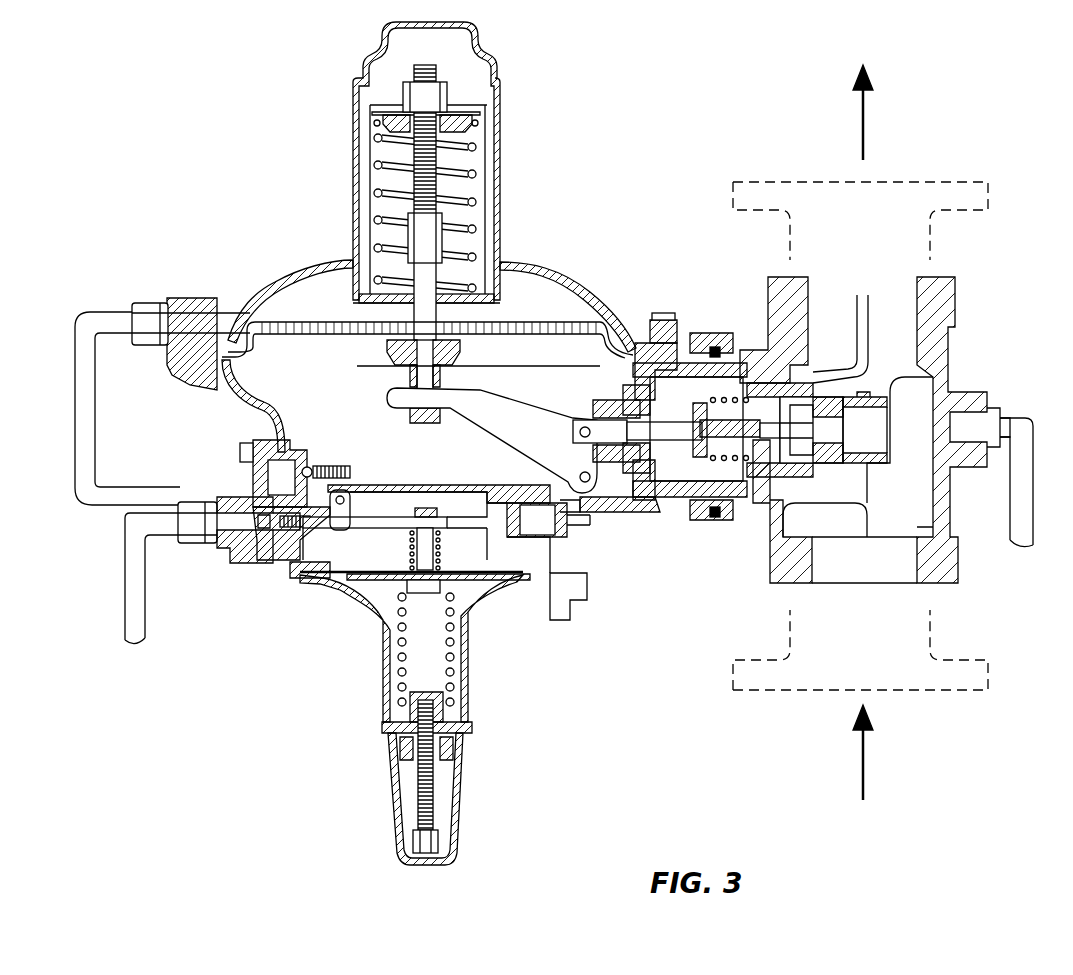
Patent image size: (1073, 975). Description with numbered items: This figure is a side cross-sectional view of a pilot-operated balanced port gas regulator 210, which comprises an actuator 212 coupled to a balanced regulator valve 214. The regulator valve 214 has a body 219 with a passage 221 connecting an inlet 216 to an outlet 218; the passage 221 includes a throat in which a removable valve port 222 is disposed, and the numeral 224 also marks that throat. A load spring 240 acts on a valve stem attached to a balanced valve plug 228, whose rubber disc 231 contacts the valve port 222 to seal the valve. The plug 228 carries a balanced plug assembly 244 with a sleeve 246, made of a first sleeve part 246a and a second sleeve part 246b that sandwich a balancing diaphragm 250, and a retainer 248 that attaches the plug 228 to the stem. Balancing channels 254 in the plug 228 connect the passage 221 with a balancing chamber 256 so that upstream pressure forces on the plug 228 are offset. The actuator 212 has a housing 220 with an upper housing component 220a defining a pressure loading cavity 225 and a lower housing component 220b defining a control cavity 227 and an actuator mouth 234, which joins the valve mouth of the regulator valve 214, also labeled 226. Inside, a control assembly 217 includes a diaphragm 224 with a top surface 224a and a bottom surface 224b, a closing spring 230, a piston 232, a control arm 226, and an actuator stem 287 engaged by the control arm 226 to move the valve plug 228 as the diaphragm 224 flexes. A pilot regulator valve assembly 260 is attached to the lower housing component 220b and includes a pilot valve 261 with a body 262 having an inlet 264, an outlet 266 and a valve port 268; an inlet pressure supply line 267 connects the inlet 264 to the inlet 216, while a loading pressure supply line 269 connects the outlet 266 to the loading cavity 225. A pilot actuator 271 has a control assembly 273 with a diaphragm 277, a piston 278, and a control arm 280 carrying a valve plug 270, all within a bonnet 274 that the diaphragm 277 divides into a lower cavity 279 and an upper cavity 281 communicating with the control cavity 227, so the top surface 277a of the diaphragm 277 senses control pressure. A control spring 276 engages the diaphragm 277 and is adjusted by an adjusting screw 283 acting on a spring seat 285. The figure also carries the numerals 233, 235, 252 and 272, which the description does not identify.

The gas regulator 210 is at (565, 62).
The actuator 212 is at (343, 222).
The regulator valve 214 is at (1005, 250).
The inlet 216 is at (893, 578).
The control assembly 217 is at (372, 393).
The outlet 218 is at (902, 288).
The body 219 is at (955, 315).
The housing 220 is at (190, 370).
The upper housing component 220a is at (560, 281).
The lower housing component 220b is at (652, 538).
The passage 221 is at (925, 508).
The valve port 222 is at (886, 458).
The diaphragm 224 is at (300, 287).
The top surface of the diaphragm 224a is at (318, 332).
The bottom surface of the diaphragm 224b is at (308, 334).
The pressure loading cavity 225 is at (320, 290).
The control arm 226 is at (518, 408).
The control cavity 227 is at (255, 403).
The valve plug 228 is at (870, 377).
The closing spring 230 is at (458, 165).
The rubber disc 231 is at (862, 468).
The piston 232 is at (433, 270).
The stem spring 233 is at (736, 418).
The actuator mouth 234 is at (680, 530).
The spring housing 235 is at (358, 230).
The load spring 240 is at (760, 365).
The balanced plug assembly 244 is at (810, 470).
The sleeve 246 is at (795, 385).
The first sleeve part 246a is at (790, 365).
The second sleeve part 246b is at (785, 375).
The retainer 248 is at (850, 437).
The balancing diaphragm 250 is at (822, 383).
The cartridge chamber 252 is at (690, 502).
The balancing channels 254 is at (840, 470).
The balancing chamber 256 is at (770, 455).
The pilot regulator valve assembly 260 is at (290, 710).
The pilot valve 261 is at (198, 568).
The body 262 is at (290, 545).
The inlet 264 is at (243, 530).
The outlet 266 is at (268, 482).
The inlet pressure supply line 267 is at (128, 588).
The valve port 268 is at (265, 557).
The loading pressure supply line 269 is at (108, 500).
The valve plug 270 is at (283, 557).
The pilot actuator 271 is at (500, 843).
The pilot lever 272 is at (325, 528).
The control assembly 273 is at (560, 565).
The bonnet 274 is at (462, 812).
The control spring 276 is at (455, 690).
The diaphragm 277 is at (465, 580).
The top surface of the pilot actuator diaphragm 277a is at (580, 573).
The piston 278 is at (432, 545).
The lower cavity 279 is at (363, 585).
The control arm 280 is at (378, 500).
The upper cavity 281 is at (515, 556).
The adjusting screw 283 is at (420, 795).
The spring seat 285 is at (382, 724).
The actuator stem 287 is at (607, 425).